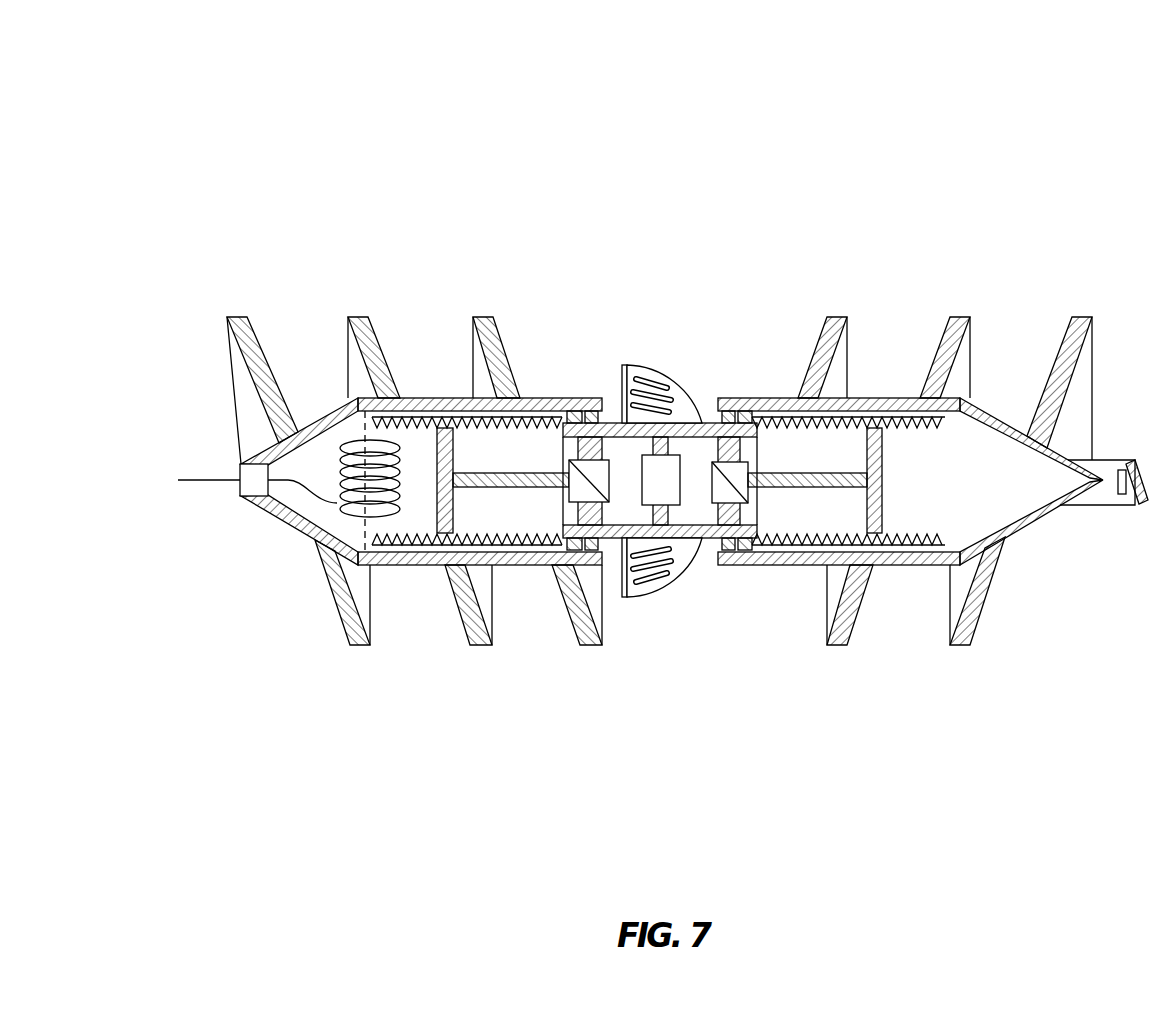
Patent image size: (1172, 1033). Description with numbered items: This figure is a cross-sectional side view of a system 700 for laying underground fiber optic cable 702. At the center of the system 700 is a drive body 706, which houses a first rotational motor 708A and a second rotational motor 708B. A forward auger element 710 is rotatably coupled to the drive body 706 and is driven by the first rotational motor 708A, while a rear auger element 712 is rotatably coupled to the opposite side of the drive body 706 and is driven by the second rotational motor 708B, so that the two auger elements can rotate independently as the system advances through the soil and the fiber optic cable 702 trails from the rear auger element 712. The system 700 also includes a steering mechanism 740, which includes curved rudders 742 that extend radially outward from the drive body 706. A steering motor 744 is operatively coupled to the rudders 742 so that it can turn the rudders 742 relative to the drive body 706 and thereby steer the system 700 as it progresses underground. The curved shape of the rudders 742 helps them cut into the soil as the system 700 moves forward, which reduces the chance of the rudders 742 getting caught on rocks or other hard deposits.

The system 700 is at (100, 105).
The underground fiber optic cable 702 is at (188, 480).
The drive body 706 is at (591, 296).
The first rotational motor 708A is at (748, 503).
The second rotational motor 708B is at (573, 507).
The forward auger element 710 is at (880, 289).
The rear auger element 712 is at (287, 294).
The steering mechanism 740 is at (657, 656).
The curved rudders 742 is at (638, 367).
The steering motor 744 is at (668, 455).